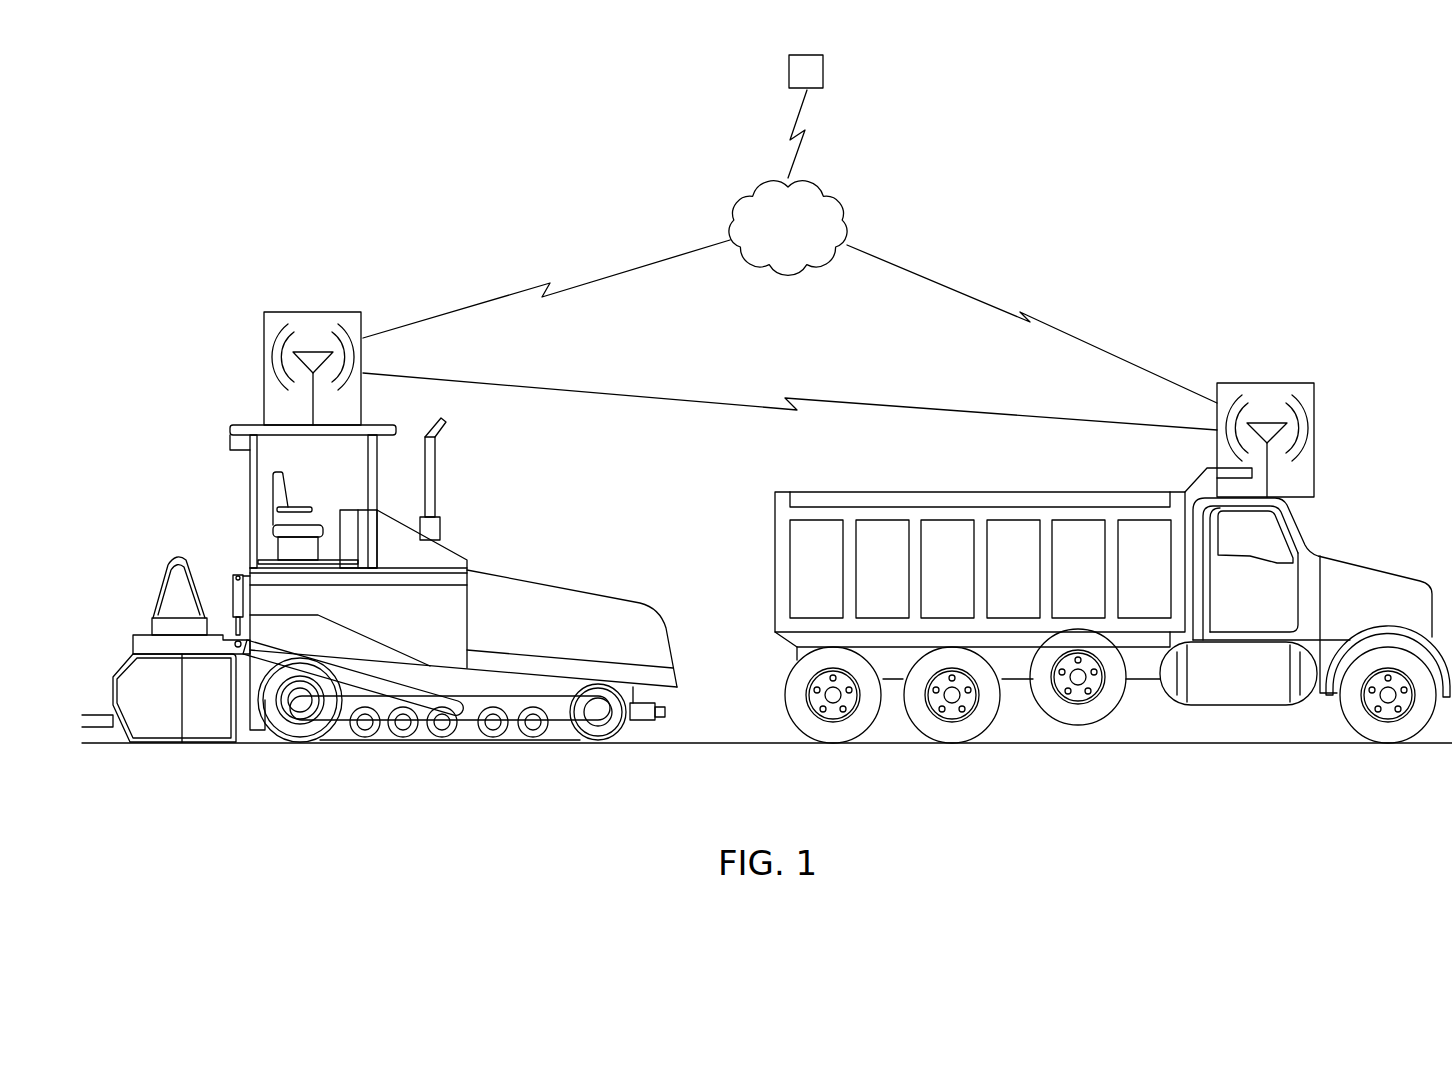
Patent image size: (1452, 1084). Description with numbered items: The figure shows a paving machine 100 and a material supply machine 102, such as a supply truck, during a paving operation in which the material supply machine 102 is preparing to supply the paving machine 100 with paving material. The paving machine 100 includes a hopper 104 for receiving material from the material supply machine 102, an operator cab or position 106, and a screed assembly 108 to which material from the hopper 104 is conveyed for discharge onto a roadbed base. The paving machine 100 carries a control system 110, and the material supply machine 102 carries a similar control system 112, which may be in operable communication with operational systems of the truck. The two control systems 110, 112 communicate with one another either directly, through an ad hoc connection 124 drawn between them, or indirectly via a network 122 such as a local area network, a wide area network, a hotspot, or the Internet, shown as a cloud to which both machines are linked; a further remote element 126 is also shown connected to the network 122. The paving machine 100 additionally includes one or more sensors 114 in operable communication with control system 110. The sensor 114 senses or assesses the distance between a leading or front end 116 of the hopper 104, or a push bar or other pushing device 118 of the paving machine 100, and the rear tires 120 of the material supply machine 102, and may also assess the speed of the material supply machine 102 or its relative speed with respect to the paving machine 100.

The paving machine 100 is at (226, 406).
The material supply machine 102 is at (1352, 505).
The hopper 104 is at (572, 600).
The operator cab or position 106 is at (250, 500).
The screed assembly 108 is at (163, 723).
The control system 110 is at (315, 312).
The control system 112 is at (1268, 383).
The sensor 114 is at (667, 716).
The leading or front end of the hopper 116 is at (688, 634).
The push bar or pushing device 118 is at (638, 722).
The rear tires 120 is at (856, 723).
The network 122 is at (832, 192).
The ad hoc connection 124 is at (835, 388).
The back office / remote server 126 is at (823, 70).